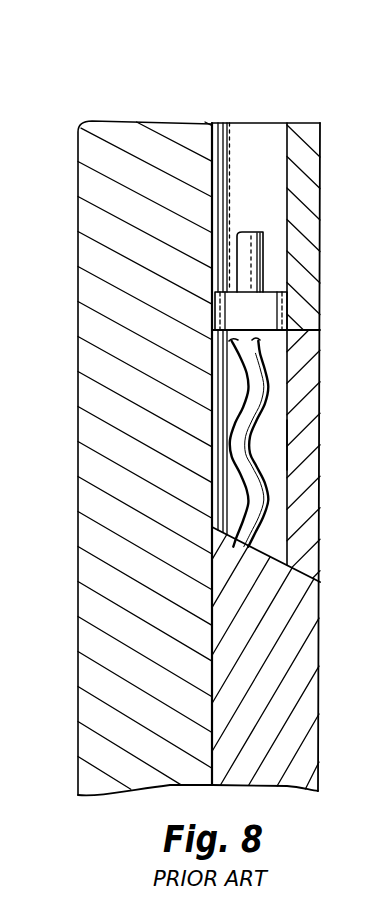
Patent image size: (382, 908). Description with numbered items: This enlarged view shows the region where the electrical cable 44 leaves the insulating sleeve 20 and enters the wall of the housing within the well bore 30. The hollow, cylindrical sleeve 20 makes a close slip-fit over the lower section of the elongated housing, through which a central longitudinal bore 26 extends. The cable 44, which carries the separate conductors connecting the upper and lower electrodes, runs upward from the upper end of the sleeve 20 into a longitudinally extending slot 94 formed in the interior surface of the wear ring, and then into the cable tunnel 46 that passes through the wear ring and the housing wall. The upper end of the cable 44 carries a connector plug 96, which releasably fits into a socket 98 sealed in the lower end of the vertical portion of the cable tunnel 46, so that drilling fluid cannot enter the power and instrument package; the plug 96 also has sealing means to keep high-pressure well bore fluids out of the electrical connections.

The sleeve 20 is at (295, 637).
The central longitudinal bore 26 is at (78, 470).
The well bore 30 is at (313, 426).
The cable 44 is at (234, 530).
The cable tunnel 46 is at (287, 172).
The slot 94 is at (296, 450).
The connector plug 96 is at (231, 341).
The socket 98 is at (215, 292).